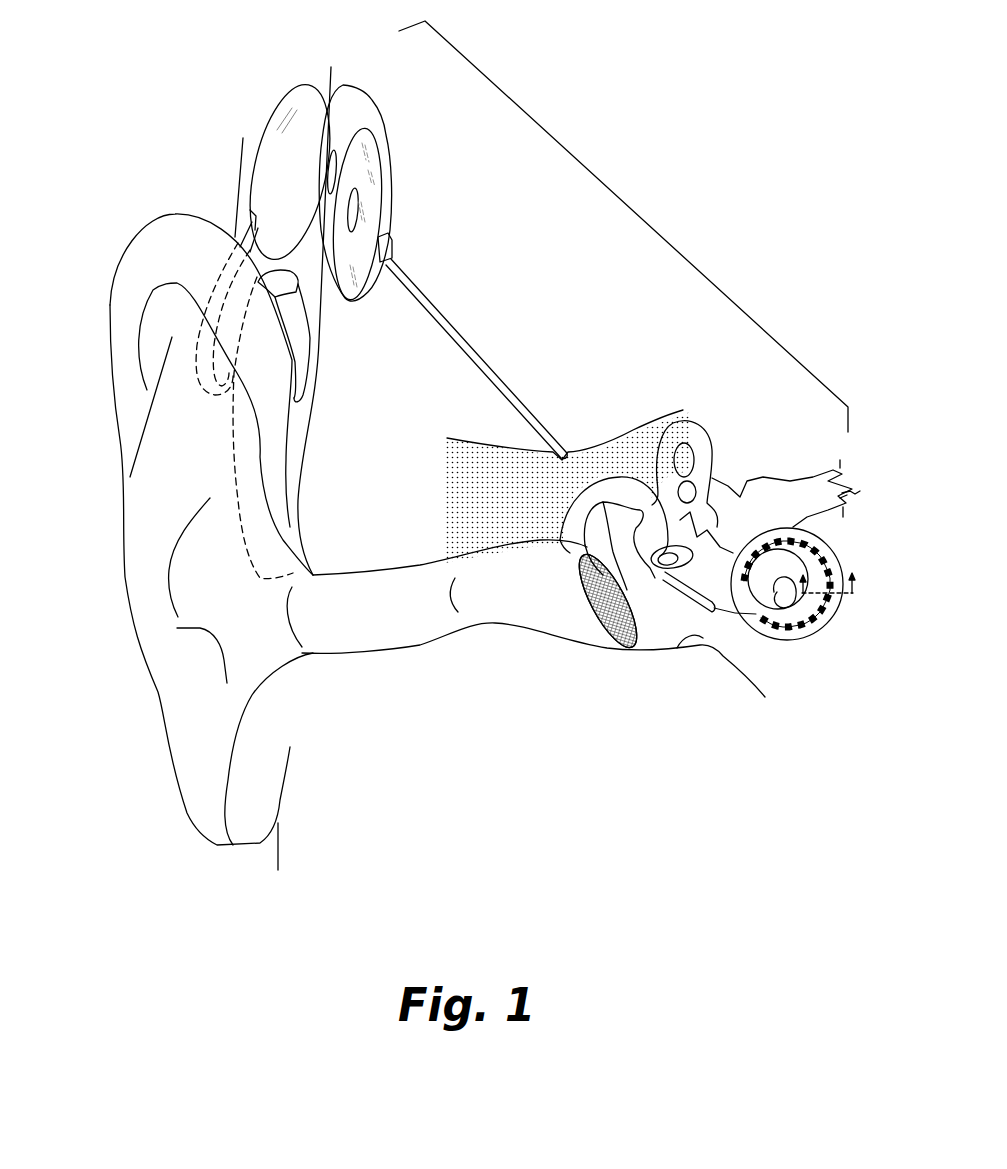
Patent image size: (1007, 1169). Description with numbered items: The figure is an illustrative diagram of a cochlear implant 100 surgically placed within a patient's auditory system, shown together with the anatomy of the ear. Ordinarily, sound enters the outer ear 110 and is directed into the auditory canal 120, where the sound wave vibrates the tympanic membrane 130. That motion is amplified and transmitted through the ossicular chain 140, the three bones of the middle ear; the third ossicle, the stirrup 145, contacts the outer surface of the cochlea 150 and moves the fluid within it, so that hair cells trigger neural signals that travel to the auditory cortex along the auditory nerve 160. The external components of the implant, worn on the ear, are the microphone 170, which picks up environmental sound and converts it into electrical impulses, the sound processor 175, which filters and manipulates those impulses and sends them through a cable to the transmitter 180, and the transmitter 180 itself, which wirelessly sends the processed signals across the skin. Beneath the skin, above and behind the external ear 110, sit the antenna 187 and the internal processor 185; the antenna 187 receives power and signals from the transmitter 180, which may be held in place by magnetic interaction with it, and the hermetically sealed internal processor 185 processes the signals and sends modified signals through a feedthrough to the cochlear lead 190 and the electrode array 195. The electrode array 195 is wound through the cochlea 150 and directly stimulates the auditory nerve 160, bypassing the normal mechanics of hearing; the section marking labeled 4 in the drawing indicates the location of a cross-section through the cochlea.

The cochlear implant 100 is at (611, 189).
The outer ear 110 is at (188, 720).
The auditory canal 120 is at (425, 643).
The tympanic membrane 130 is at (617, 647).
The ossicular chain 140 is at (610, 490).
The stirrup 145 is at (658, 575).
The cochlea 150 is at (828, 620).
The auditory nerve 160 is at (780, 480).
The microphone 170 is at (307, 378).
The sound processor 175 is at (292, 285).
The transmitter 180 is at (268, 133).
The internal processor 185 is at (368, 152).
The antenna 187 is at (338, 103).
The cochlear lead 190 is at (484, 359).
The electrode array 195 is at (768, 633).
The section line 4- 4 is at (826, 573).